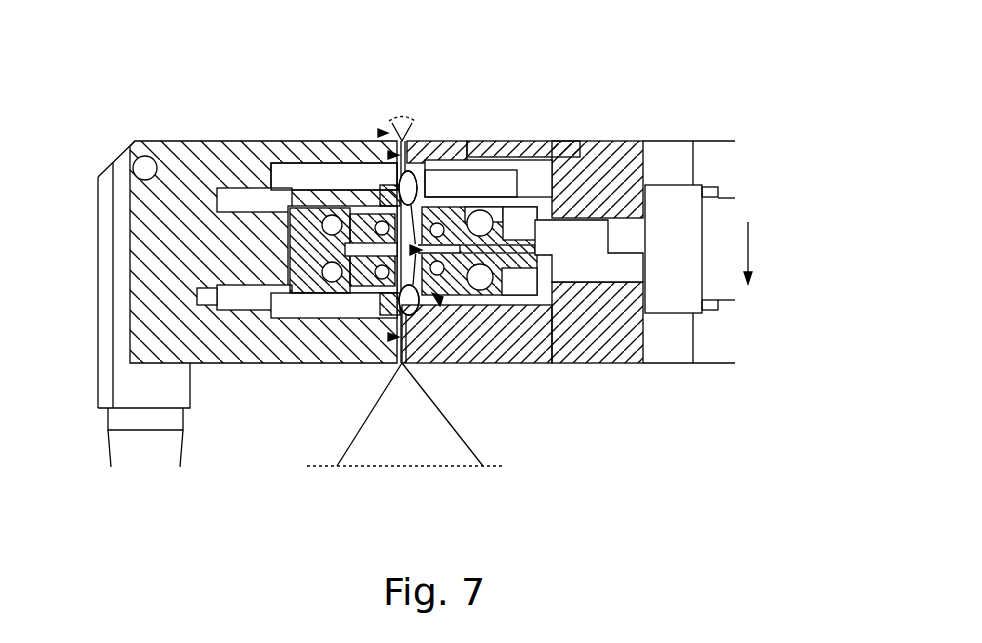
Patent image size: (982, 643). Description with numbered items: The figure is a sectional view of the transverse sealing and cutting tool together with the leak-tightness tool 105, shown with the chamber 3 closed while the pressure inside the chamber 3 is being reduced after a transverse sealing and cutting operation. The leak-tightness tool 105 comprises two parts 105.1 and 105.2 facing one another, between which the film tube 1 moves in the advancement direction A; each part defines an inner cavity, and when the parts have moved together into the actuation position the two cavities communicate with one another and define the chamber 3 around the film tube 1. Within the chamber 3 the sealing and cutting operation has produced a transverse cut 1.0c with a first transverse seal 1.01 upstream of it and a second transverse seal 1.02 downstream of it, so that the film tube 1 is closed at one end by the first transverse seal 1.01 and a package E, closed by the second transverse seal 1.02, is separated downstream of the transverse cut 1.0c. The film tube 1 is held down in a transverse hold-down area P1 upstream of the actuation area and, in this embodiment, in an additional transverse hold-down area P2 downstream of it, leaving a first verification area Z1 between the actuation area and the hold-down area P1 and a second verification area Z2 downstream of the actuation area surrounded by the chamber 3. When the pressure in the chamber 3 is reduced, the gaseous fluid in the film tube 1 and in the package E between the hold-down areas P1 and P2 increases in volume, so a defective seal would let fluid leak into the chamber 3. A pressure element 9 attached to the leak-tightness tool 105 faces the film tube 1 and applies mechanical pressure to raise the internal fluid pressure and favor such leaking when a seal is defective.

The leak-tightness tool 105 is at (712, 110).
The first part of the leak-tightness tool 105.1 is at (173, 150).
The second part of the leak-tightness tool 105.2 is at (605, 141).
The film tube 1 is at (378, 133).
The first transverse seal 1.01 is at (480, 160).
The second transverse seal 1.02 is at (596, 320).
The transverse cut 1.0c is at (290, 250).
The chamber 3 is at (520, 305).
The pressure element 9 is at (330, 186).
The transverse hold-down area P1 is at (316, 141).
The additional transverse hold-down area P2 is at (388, 337).
The first verification area Z1 is at (428, 165).
The second verification area Z2 is at (441, 301).
The package E is at (450, 440).
The advancement direction A is at (759, 253).